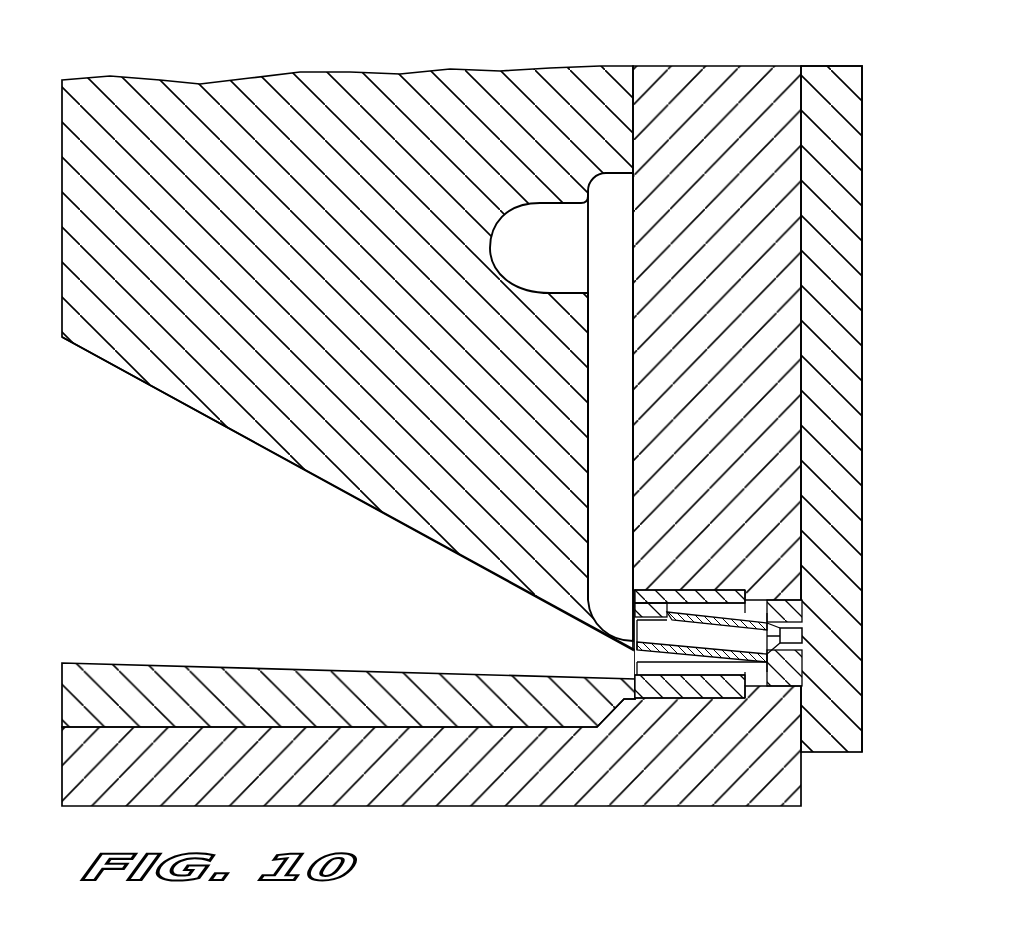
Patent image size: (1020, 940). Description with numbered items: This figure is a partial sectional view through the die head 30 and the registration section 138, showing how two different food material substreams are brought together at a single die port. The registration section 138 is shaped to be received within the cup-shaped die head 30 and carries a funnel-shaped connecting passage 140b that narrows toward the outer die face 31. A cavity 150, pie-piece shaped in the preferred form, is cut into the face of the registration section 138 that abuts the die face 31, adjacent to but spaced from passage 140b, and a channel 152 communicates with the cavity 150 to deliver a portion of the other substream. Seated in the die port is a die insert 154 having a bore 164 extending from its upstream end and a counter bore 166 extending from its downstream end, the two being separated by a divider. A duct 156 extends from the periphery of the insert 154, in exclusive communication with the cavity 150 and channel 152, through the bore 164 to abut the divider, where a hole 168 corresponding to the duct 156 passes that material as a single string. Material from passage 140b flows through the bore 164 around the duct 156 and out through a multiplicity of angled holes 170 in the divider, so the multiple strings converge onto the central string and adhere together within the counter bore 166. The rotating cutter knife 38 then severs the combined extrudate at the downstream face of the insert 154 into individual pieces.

The die head 30 is at (590, 808).
The outer die face 31 is at (802, 176).
The rotating cutter knife 38 is at (845, 308).
The registration section 138 is at (287, 97).
The connecting passage 140b is at (245, 551).
The cavity 150 is at (547, 220).
The channel 152 is at (618, 220).
The die insert 154 is at (722, 592).
The duct 156 is at (722, 660).
The bore 164 is at (643, 660).
The counter bore 166 is at (797, 647).
The hole 168 is at (790, 645).
The holes 170 is at (784, 612).